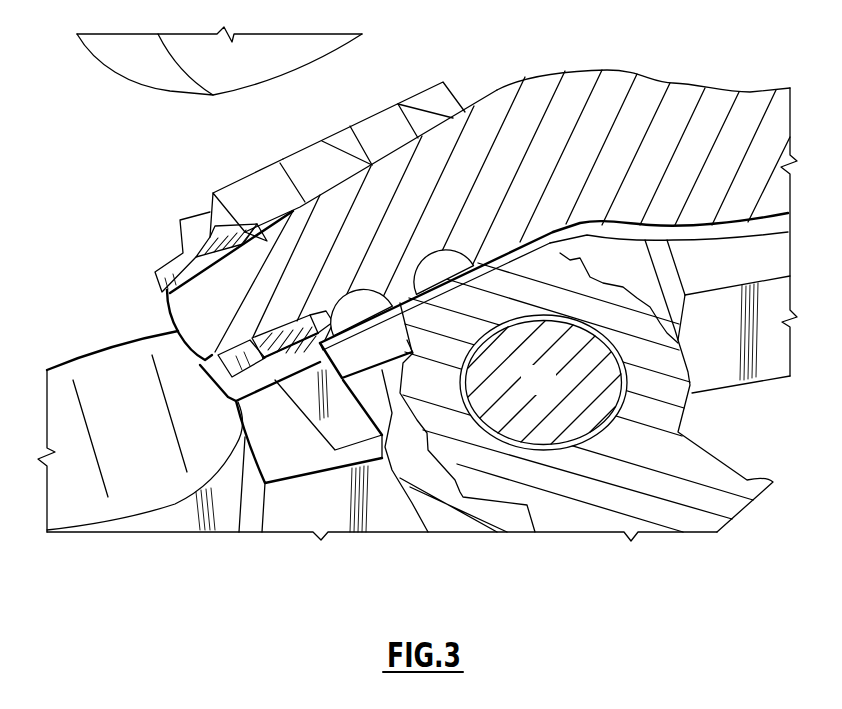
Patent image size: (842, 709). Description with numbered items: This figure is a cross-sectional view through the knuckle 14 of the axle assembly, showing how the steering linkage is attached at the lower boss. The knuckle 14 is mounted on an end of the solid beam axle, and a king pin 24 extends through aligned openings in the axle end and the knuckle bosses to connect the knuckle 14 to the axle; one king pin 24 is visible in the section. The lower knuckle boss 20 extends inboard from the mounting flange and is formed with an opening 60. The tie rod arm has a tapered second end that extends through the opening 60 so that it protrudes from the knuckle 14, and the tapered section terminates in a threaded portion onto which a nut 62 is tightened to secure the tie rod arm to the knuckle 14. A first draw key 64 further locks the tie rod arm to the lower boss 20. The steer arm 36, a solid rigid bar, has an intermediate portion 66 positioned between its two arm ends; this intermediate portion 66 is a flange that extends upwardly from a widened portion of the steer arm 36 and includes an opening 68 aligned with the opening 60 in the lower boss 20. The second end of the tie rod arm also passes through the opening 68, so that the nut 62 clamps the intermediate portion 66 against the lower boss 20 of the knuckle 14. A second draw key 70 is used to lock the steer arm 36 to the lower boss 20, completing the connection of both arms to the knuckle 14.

The knuckle 14 is at (476, 212).
The lower knuckle boss 20 is at (670, 388).
The king pin 24 is at (551, 392).
The steer arm 36 is at (130, 490).
The opening 60 is at (347, 159).
The nut 62 is at (228, 396).
The first draw key 64 is at (438, 270).
The intermediate portion 66 is at (257, 205).
The opening 68 is at (357, 335).
The second draw key 70 is at (353, 305).